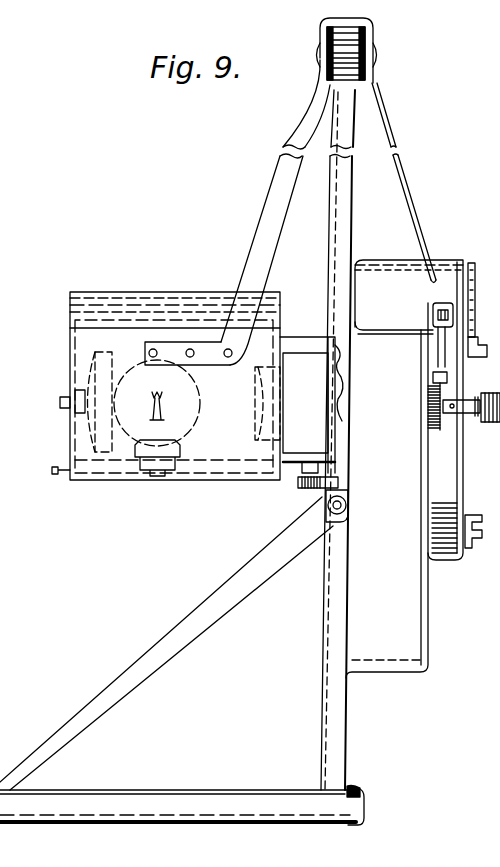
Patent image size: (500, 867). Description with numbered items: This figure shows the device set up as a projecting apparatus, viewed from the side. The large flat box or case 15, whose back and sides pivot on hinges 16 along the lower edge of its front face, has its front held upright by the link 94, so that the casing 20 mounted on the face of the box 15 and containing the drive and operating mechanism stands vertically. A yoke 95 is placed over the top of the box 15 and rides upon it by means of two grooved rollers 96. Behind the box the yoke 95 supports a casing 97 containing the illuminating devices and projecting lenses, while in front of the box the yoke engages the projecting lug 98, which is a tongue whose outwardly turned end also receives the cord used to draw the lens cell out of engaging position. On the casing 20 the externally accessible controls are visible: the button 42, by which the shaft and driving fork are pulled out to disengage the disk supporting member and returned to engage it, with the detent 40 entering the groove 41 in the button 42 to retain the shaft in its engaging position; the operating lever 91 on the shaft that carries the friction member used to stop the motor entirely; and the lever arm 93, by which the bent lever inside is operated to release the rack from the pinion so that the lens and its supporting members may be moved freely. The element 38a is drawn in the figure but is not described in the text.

The box or case 15 is at (353, 223).
The hinges 16 is at (353, 792).
The casing 20 is at (453, 258).
The rack bar 38a is at (430, 380).
The detent 40 is at (433, 415).
The groove 41 is at (473, 398).
The button 42 is at (484, 425).
The operating lever 91 is at (474, 312).
The lever arm 93 is at (470, 522).
The link 94 is at (203, 610).
The yoke 95 is at (383, 110).
The grooved rollers 96 is at (352, 50).
The casing 97 is at (120, 340).
The projecting lug 98 is at (443, 360).